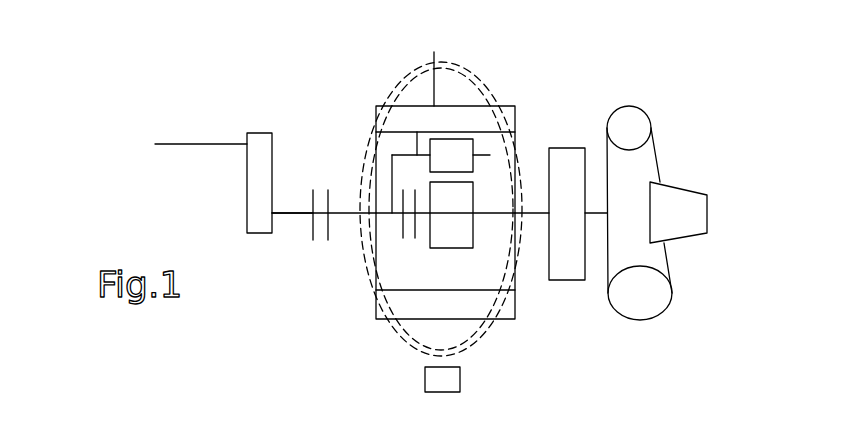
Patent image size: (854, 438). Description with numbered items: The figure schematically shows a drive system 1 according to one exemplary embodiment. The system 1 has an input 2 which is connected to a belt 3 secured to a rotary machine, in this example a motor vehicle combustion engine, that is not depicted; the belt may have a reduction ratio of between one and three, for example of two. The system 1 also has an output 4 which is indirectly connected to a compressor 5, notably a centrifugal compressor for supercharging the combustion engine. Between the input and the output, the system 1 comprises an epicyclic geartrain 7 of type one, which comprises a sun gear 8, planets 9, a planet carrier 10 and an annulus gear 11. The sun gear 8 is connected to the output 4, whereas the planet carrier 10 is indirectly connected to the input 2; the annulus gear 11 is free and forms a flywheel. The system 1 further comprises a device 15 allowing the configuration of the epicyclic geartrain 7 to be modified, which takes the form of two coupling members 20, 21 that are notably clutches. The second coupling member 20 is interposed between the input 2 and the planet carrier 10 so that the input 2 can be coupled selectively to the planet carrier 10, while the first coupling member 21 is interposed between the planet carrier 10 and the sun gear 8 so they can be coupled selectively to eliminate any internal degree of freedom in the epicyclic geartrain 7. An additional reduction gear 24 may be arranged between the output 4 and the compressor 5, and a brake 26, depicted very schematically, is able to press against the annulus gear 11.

The drive system 1 is at (245, 58).
The input 2 is at (297, 216).
The belt 3 is at (258, 180).
The output 4 is at (533, 217).
The compressor 5 is at (640, 129).
The epicyclic geartrain 7 is at (363, 268).
The sun gear 8 is at (473, 228).
The planets 9 is at (460, 150).
The planet carrier 10 is at (417, 132).
The annulus gear 11 is at (434, 52).
The device 15 is at (345, 140).
The second coupling member 20 is at (321, 196).
The first coupling member 21 is at (410, 184).
The additional reduction gear 24 is at (566, 163).
The brake 26 is at (437, 377).